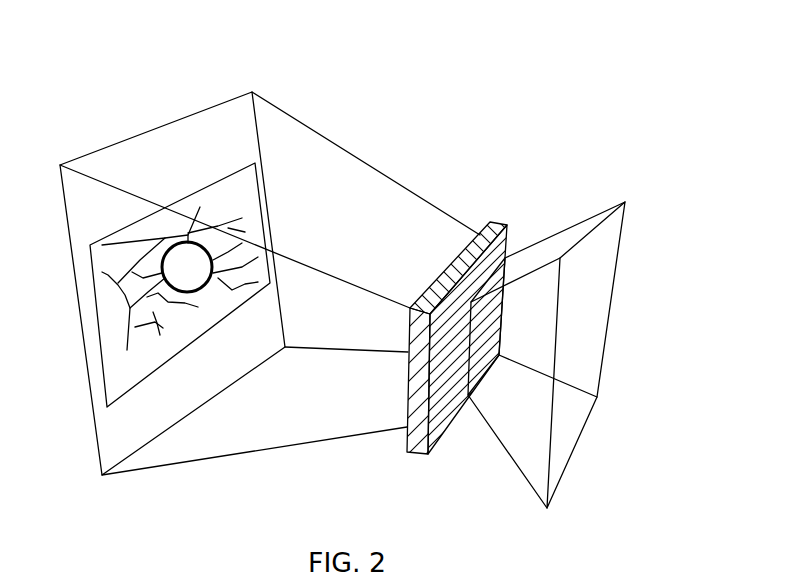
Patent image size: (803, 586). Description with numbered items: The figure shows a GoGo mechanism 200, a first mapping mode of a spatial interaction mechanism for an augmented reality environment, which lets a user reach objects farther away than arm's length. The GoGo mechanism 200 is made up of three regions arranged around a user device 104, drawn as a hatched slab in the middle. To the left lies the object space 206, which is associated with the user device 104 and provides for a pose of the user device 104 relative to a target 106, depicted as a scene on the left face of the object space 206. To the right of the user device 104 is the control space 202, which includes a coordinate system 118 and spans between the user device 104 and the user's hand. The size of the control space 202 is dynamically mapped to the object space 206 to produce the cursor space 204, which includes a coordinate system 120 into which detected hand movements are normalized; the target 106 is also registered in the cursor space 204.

The GoGo mechanism 200 is at (381, 258).
The object space 206 is at (165, 58).
The target 106 is at (103, 395).
The cursor space 204 is at (372, 185).
The coordinate system 120 is at (200, 461).
The user device 104 is at (412, 456).
The control space 202 is at (575, 157).
The coordinate system 118 is at (520, 474).